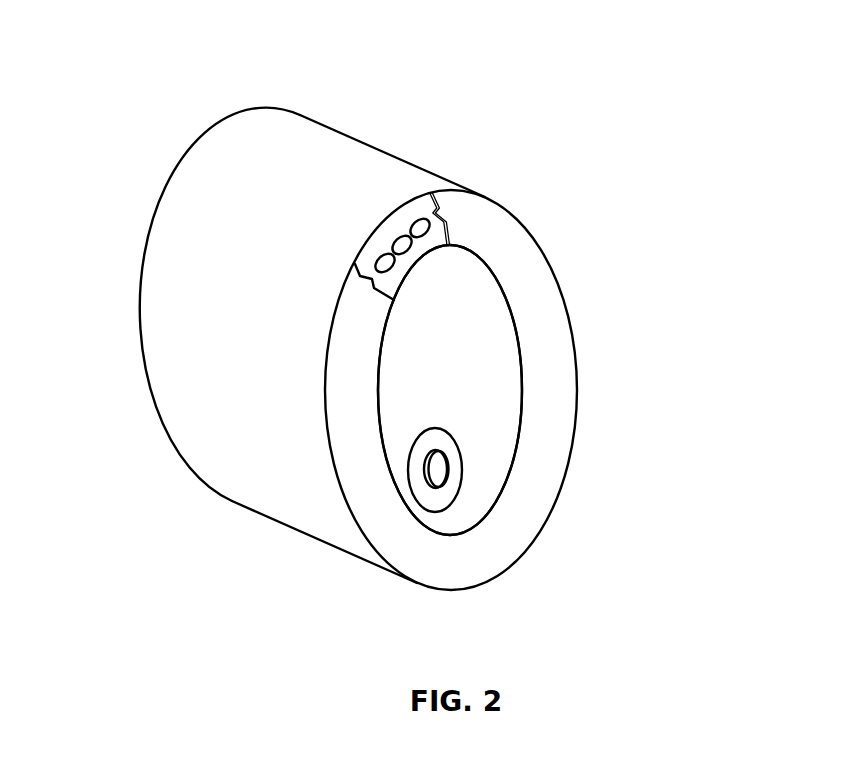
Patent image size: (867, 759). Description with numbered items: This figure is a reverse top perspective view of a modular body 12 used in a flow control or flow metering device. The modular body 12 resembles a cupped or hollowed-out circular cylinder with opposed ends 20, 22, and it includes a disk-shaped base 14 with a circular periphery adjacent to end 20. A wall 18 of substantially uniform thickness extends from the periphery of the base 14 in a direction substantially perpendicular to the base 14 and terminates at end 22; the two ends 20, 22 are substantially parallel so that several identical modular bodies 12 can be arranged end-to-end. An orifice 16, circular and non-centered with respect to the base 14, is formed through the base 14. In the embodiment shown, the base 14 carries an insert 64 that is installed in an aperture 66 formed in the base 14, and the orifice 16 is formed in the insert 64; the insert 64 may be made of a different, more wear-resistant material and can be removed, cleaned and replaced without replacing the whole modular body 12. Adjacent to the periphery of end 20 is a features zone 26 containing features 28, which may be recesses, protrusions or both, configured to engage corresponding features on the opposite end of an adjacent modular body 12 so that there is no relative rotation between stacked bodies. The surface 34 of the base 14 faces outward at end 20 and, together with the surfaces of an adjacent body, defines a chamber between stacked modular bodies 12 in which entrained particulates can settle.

The modular body 12 is at (286, 322).
The base 14 is at (485, 325).
The orifice 16 is at (435, 485).
The wall 18 is at (335, 131).
The end 20 is at (475, 390).
The end 22 is at (160, 198).
The features zone 26 is at (360, 278).
The features 28 is at (447, 223).
The surface 34 is at (500, 392).
The insert 64 is at (435, 485).
The aperture 66 is at (447, 492).